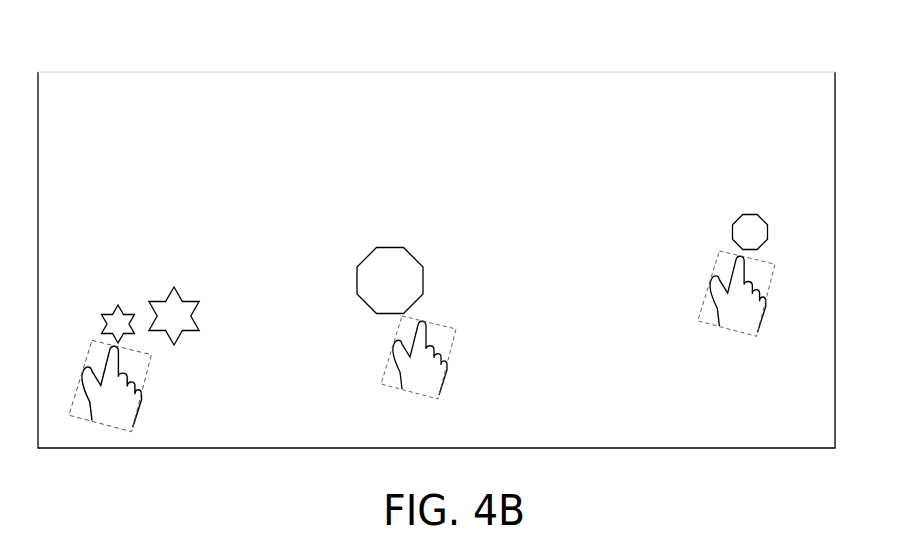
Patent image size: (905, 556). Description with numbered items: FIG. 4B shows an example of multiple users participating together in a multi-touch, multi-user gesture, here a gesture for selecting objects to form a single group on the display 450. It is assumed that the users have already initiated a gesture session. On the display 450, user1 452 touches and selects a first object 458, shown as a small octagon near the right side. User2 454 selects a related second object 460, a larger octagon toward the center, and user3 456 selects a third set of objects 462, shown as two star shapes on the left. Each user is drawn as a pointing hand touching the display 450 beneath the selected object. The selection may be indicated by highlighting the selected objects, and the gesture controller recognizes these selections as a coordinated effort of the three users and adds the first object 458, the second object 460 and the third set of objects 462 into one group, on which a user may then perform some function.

The display 450 is at (492, 60).
The user1 452 is at (717, 318).
The user2 454 is at (400, 373).
The user3 456 is at (127, 412).
The first object 458 is at (729, 215).
The second object 460 is at (355, 248).
The third set of objects 462 is at (121, 279).